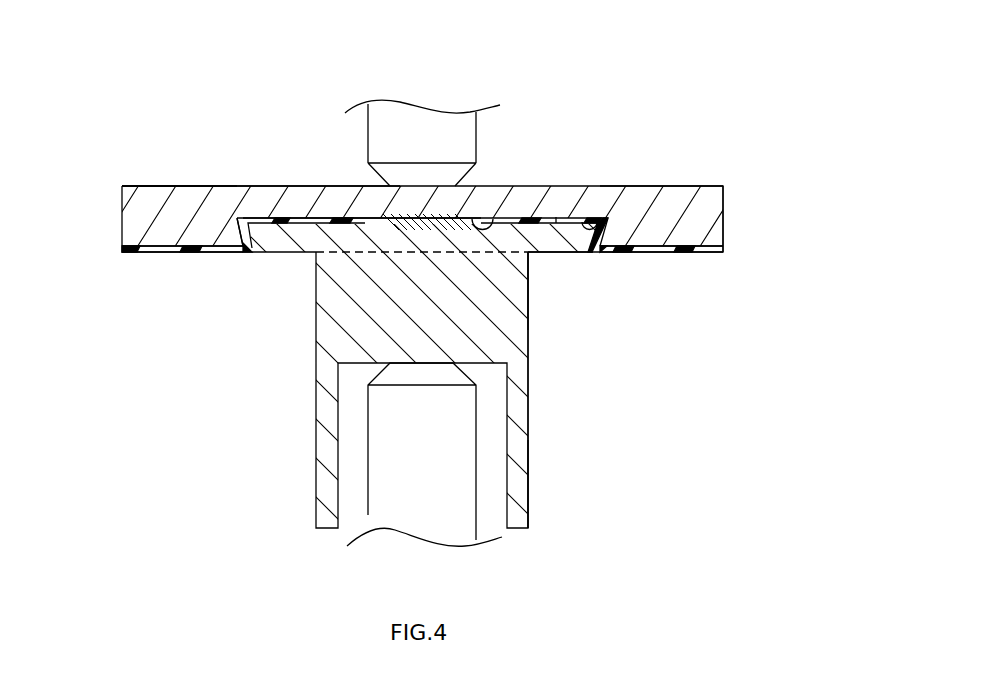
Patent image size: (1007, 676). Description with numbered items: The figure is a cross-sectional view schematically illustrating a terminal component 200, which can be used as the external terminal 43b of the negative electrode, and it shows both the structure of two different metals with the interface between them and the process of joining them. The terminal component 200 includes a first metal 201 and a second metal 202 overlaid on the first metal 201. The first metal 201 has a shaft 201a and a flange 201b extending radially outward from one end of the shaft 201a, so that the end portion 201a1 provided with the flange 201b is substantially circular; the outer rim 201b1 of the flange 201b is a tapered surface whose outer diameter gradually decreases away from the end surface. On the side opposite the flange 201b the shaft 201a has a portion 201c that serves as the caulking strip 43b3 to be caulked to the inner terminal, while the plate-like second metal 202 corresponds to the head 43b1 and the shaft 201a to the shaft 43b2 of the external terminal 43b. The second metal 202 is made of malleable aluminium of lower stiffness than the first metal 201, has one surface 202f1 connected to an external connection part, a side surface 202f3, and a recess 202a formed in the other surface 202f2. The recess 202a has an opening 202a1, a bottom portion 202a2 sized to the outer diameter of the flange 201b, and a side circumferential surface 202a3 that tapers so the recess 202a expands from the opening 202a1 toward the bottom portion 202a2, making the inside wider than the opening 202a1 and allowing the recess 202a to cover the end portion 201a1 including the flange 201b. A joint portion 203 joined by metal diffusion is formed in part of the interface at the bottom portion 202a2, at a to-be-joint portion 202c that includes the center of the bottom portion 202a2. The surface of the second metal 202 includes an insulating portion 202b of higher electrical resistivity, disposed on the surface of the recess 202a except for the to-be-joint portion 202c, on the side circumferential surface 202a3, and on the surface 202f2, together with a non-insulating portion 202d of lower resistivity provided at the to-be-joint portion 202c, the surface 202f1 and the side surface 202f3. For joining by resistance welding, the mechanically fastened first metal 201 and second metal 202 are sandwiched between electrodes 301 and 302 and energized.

The external terminal of the negative electrode 43b is at (201, 87).
The head 43b1 is at (166, 176).
The shaft 43b2 is at (541, 284).
The caulking strip 43b3 is at (546, 503).
The terminal component 200 is at (685, 96).
The first metal 201 is at (292, 364).
The shaft 201a is at (528, 328).
The end portion 201a1 is at (556, 217).
The flange 201b is at (575, 252).
The outer rim 201b1 is at (242, 229).
The portion 201c is at (530, 453).
The second metal 202 is at (735, 159).
The recess 202a is at (289, 239).
The opening 202a1 is at (330, 255).
The bottom portion 202a2 is at (316, 215).
The side circumferential surface 202a3 is at (598, 220).
The insulating portion 202b is at (712, 261).
The to-be-joint portion 202c is at (460, 146).
The non-insulating portion 202d is at (236, 177).
The one surface 202f1 is at (148, 188).
The other surface 202f2 is at (157, 253).
The side surface 202f3 is at (724, 217).
The joint portion 203 is at (422, 199).
The electrode 301 is at (368, 514).
The electrode 302 is at (350, 118).